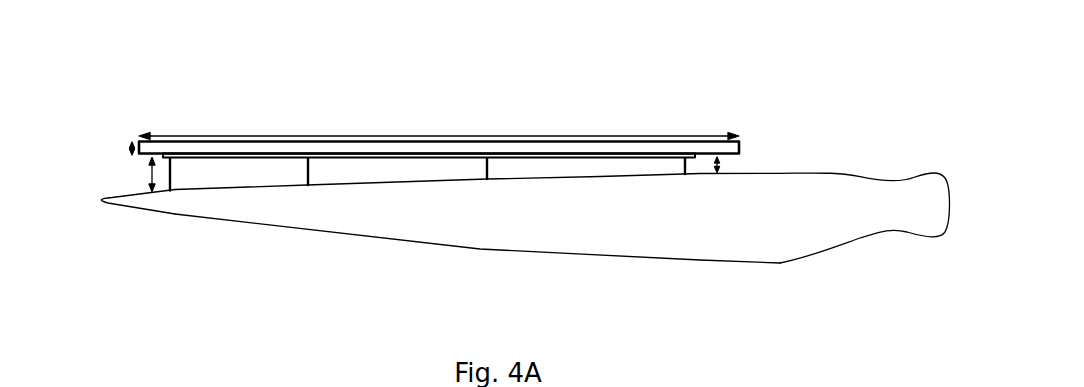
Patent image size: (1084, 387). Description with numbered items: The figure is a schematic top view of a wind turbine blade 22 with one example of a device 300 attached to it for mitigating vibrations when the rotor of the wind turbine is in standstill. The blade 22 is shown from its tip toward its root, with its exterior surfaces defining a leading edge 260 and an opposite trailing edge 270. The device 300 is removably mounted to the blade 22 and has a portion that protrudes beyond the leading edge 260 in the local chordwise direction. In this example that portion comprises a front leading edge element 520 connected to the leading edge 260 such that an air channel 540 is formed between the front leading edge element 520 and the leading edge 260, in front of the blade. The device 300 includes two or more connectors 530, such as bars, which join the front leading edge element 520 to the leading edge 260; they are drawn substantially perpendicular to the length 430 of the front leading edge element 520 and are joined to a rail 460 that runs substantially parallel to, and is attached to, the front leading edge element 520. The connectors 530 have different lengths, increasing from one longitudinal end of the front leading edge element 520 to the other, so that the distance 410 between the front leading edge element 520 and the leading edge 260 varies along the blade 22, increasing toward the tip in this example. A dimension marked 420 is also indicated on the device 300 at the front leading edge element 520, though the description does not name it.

The wind turbine blade 22 is at (555, 240).
The leading edge 260 is at (825, 170).
The trailing edge 270 is at (275, 230).
The device 300 is at (692, 124).
The distance 410 is at (149, 182).
The thickness of carrier plate 420 is at (128, 148).
The length of the front leading edge element 430 is at (445, 137).
The rail 460 is at (212, 158).
The front leading edge element 520 is at (188, 148).
The connectors 530 is at (310, 165).
The air channel 540 is at (418, 170).